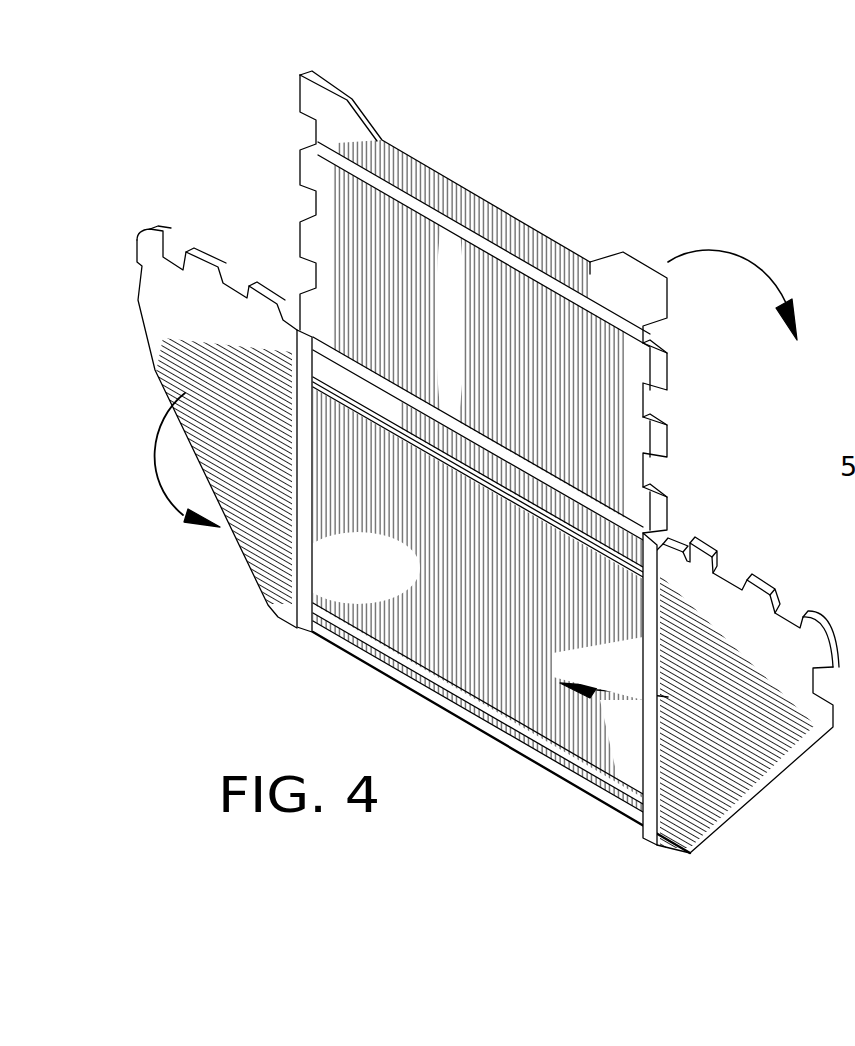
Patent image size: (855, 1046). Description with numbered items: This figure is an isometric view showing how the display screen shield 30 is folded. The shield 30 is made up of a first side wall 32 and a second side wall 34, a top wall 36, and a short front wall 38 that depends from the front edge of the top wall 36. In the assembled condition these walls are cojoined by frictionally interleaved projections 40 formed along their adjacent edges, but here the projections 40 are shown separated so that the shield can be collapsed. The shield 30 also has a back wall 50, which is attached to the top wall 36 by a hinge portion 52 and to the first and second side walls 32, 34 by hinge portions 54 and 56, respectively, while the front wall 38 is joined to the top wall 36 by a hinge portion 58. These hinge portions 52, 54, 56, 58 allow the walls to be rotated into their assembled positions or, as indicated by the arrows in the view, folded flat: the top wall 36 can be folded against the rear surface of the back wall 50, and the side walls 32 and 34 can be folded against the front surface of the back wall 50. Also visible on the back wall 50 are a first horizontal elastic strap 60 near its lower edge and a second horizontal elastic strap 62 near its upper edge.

The display screen shield 30 is at (563, 140).
The first side wall 32 is at (258, 523).
The second side wall 34 is at (748, 680).
The top wall 36 is at (487, 290).
The front wall 38 is at (410, 176).
The interleaved projections 40 is at (702, 548).
The back wall 50 is at (505, 630).
The hinge portion 52 is at (555, 482).
The hinge portion 54 is at (302, 597).
The hinge portion 56 is at (647, 773).
The hinge portion 58 is at (455, 215).
The first horizontal elastic strap 60 is at (383, 650).
The second horizontal elastic strap 62 is at (412, 443).